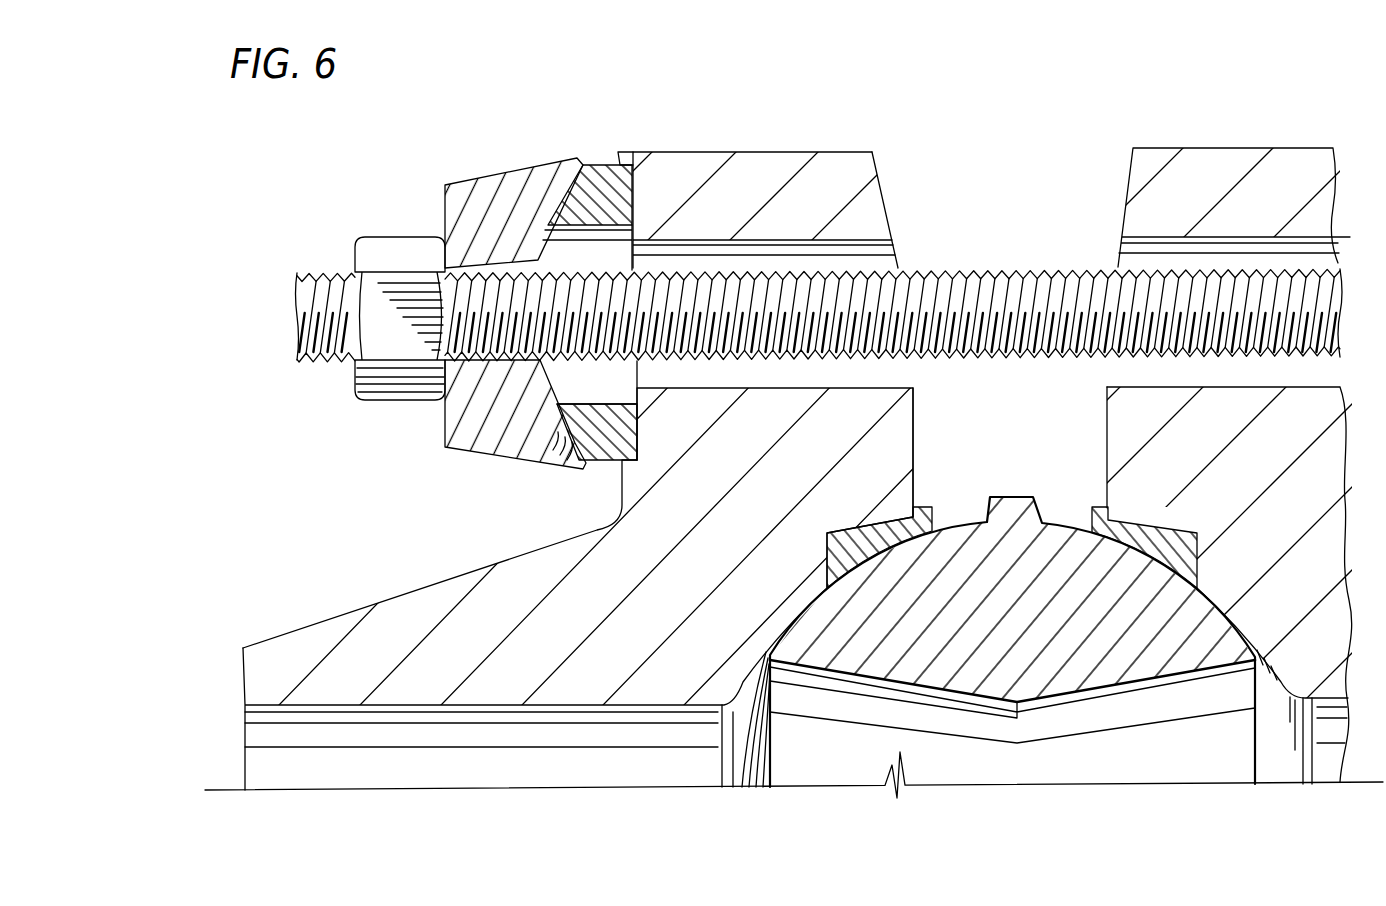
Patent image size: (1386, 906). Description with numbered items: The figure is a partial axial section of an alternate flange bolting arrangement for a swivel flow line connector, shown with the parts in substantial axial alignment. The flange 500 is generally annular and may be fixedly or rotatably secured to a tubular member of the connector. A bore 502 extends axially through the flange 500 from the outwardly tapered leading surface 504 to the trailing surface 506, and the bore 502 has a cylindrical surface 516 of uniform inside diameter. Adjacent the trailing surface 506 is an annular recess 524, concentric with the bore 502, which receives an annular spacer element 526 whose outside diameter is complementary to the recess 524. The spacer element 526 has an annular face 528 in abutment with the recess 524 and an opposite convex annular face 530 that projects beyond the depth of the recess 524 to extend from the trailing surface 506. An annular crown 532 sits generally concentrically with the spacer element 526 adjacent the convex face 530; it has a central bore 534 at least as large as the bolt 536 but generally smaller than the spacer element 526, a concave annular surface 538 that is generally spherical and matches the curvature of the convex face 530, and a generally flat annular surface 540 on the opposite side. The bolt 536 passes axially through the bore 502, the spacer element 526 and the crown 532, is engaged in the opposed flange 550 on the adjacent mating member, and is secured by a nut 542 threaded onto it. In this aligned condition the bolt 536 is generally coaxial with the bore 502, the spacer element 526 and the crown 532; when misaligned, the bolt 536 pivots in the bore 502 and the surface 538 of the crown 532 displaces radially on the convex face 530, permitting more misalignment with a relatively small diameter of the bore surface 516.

The flange 500 is at (760, 150).
The bore 502 is at (912, 384).
The outwardly tapered leading surface 504 is at (890, 213).
The trailing surface 506 is at (620, 482).
The cylindrical surface 516 is at (785, 385).
The annular recess 524 is at (630, 150).
The annular spacer element 526 is at (591, 460).
The annular face 528 is at (636, 197).
The convex annular face 530 is at (550, 465).
The annular crown 532 is at (507, 183).
The central bore 534 is at (478, 260).
The bolt 536 is at (1024, 268).
The concave annular surface 538 is at (548, 390).
The flat annular surface 540 is at (446, 426).
The nut 542 is at (389, 247).
The opposed flange 550 is at (1213, 157).